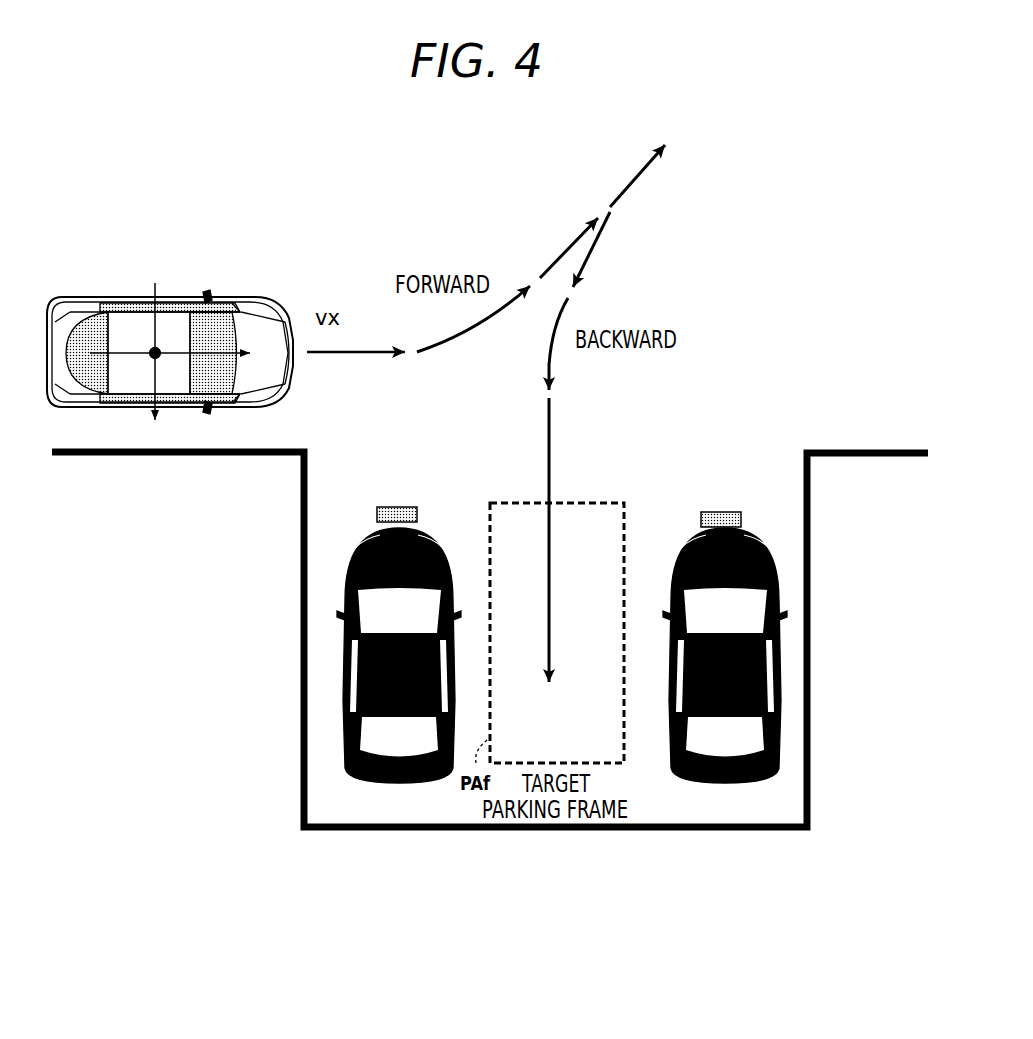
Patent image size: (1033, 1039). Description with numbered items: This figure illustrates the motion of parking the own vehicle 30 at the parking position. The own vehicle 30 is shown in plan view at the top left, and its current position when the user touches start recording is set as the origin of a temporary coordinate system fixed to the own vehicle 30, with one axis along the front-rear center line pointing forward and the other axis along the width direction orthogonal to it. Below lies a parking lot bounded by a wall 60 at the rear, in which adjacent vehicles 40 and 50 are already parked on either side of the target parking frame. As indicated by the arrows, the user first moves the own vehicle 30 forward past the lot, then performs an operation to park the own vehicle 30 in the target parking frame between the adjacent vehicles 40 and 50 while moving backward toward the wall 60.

The own vehicle 30 is at (195, 290).
The adjacent vehicle 40 is at (340, 598).
The adjacent vehicle 50 is at (722, 510).
The wall 60 is at (465, 833).